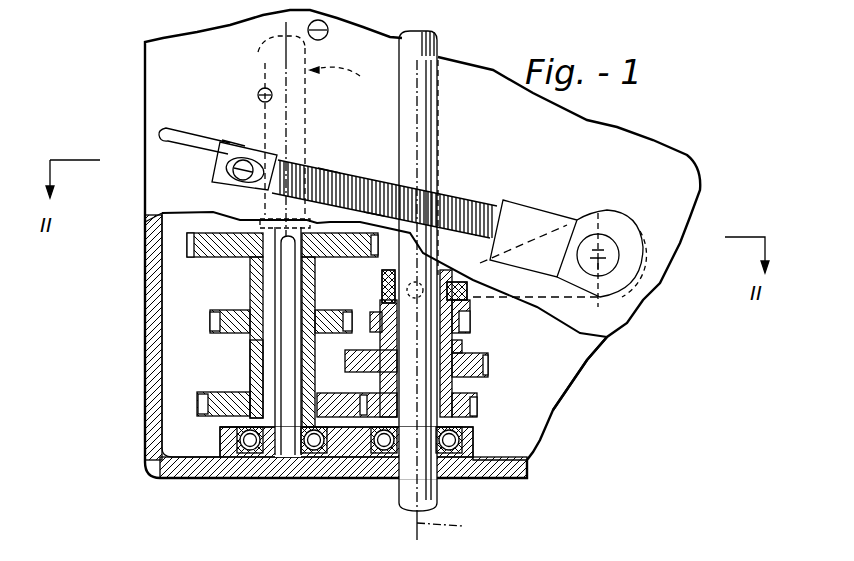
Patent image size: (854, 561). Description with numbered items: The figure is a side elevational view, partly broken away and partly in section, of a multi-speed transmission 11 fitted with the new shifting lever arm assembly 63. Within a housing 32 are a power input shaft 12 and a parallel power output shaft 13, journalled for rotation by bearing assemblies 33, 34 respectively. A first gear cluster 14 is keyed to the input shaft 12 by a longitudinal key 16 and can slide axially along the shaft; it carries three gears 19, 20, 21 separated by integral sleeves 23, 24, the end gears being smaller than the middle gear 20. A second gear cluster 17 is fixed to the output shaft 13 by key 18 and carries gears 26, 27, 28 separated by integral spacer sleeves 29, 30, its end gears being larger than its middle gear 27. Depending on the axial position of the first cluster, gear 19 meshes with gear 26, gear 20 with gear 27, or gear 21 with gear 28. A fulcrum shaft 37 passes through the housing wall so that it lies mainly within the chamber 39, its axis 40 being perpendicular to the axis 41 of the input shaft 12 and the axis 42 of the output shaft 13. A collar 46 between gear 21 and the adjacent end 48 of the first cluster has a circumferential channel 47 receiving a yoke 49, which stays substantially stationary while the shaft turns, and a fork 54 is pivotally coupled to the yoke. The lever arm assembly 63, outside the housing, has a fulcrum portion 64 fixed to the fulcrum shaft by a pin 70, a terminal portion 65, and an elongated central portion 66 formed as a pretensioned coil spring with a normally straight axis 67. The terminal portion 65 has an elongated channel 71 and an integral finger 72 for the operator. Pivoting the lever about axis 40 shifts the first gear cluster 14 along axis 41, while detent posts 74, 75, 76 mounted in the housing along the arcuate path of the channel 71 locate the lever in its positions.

The multi-speed transmission 11 is at (622, 128).
The power input shaft 12 is at (399, 494).
The power output shaft 13 is at (322, 147).
The first gear cluster 14 is at (490, 364).
The key 16 is at (470, 393).
The second gear cluster 17 is at (212, 425).
The key 18 is at (283, 416).
The gear 19 is at (478, 412).
The middle gear 20 is at (455, 380).
The gear 21 is at (462, 334).
The integral sleeve 23 is at (365, 382).
The integral sleeve 24 is at (358, 352).
The gear 26 is at (197, 402).
The middle gear 27 is at (213, 322).
The gear 28 is at (186, 243).
The integral spacer sleeve 29 is at (252, 283).
The integral spacer sleeve 30 is at (250, 374).
The housing 32 is at (148, 344).
The bearing assembly 33 is at (459, 450).
The bearing assembly 34 is at (246, 446).
The fulcrum shaft 37 is at (527, 243).
The chamber 39 is at (601, 357).
The axis 40 is at (596, 298).
The axis 41 is at (454, 300).
The axis 42 is at (262, 52).
The collar 46 is at (380, 270).
The channel 47 is at (380, 300).
The end 48 is at (392, 285).
The yoke 49 is at (478, 298).
The fork 54 is at (508, 297).
The lever arm assembly 63 is at (453, 181).
The fulcrum portion 64 is at (553, 197).
The terminal portion 65 is at (247, 142).
The elongated central portion 66 is at (374, 194).
The axis 67 is at (326, 170).
The pin 70 is at (633, 212).
The channel 71 is at (222, 140).
The finger 72 is at (170, 127).
The post 74 is at (235, 177).
The post 75 is at (257, 97).
The post 76 is at (324, 38).